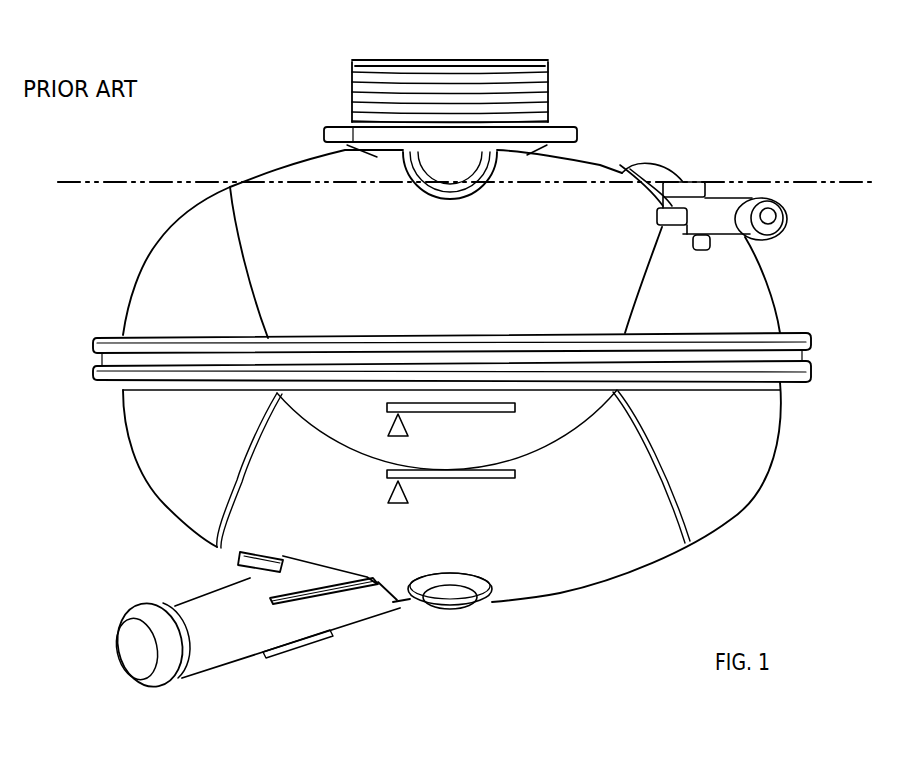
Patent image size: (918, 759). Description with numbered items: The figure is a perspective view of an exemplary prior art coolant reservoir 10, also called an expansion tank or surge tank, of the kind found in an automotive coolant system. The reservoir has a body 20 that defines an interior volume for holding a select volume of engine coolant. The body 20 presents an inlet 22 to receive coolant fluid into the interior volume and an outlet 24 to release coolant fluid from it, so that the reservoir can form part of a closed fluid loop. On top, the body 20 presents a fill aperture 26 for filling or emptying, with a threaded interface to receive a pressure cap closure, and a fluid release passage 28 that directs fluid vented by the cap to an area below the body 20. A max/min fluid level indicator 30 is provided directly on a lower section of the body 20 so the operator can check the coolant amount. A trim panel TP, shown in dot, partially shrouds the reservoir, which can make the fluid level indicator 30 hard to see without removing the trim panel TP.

The coolant reservoir 10 is at (661, 80).
The body 20 is at (757, 293).
The inlet 22 is at (787, 193).
The outlet 24 is at (215, 650).
The fill aperture 26 is at (530, 58).
The fluid release passage 28 is at (475, 605).
The max/min fluid level indicator 30 is at (549, 457).
The trim panel TP is at (817, 182).